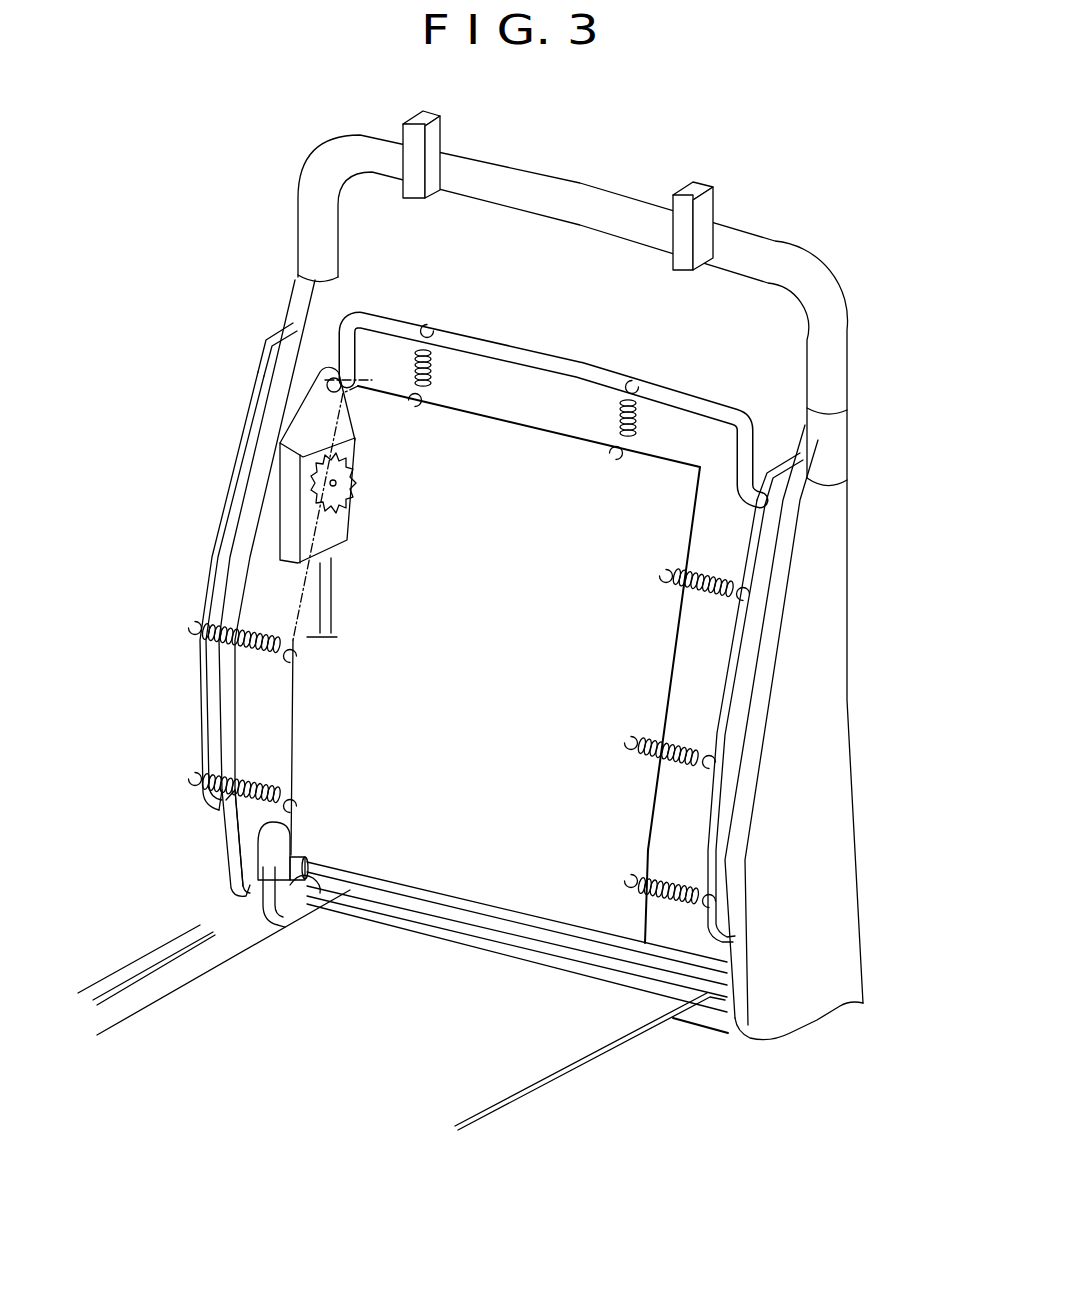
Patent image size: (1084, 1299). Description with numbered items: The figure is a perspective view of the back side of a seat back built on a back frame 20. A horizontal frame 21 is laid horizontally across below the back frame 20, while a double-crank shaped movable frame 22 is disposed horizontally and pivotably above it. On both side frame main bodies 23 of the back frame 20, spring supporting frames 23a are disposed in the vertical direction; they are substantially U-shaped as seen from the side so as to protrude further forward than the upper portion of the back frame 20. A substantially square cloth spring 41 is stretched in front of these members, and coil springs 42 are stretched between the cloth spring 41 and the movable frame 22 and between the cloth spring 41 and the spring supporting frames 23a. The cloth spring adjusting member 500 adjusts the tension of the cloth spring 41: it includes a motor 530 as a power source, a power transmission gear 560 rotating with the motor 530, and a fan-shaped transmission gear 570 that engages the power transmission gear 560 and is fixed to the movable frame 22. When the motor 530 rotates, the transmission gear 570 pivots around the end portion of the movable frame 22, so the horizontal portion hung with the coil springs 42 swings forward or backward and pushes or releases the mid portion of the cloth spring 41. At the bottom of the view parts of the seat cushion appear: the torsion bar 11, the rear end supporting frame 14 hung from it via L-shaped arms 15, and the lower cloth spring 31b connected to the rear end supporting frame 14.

The torsion bar 11 is at (700, 1013).
The rear end supporting frame 14 is at (265, 915).
The L-shaped arms 15 is at (240, 884).
The back frame 20 is at (828, 1010).
The horizontal frame 21 is at (720, 950).
The movable frame 22 is at (710, 402).
The side frame main bodies 23 is at (222, 660).
The spring supporting frames 23a is at (275, 327).
The lower cloth spring 31b is at (547, 1085).
The cloth spring 41 is at (490, 410).
The coil springs 42 is at (243, 633).
The cloth spring adjusting member 500 is at (230, 450).
The motor 530 is at (300, 467).
The power transmission gear 560 is at (305, 497).
The transmission gear 570 is at (313, 417).